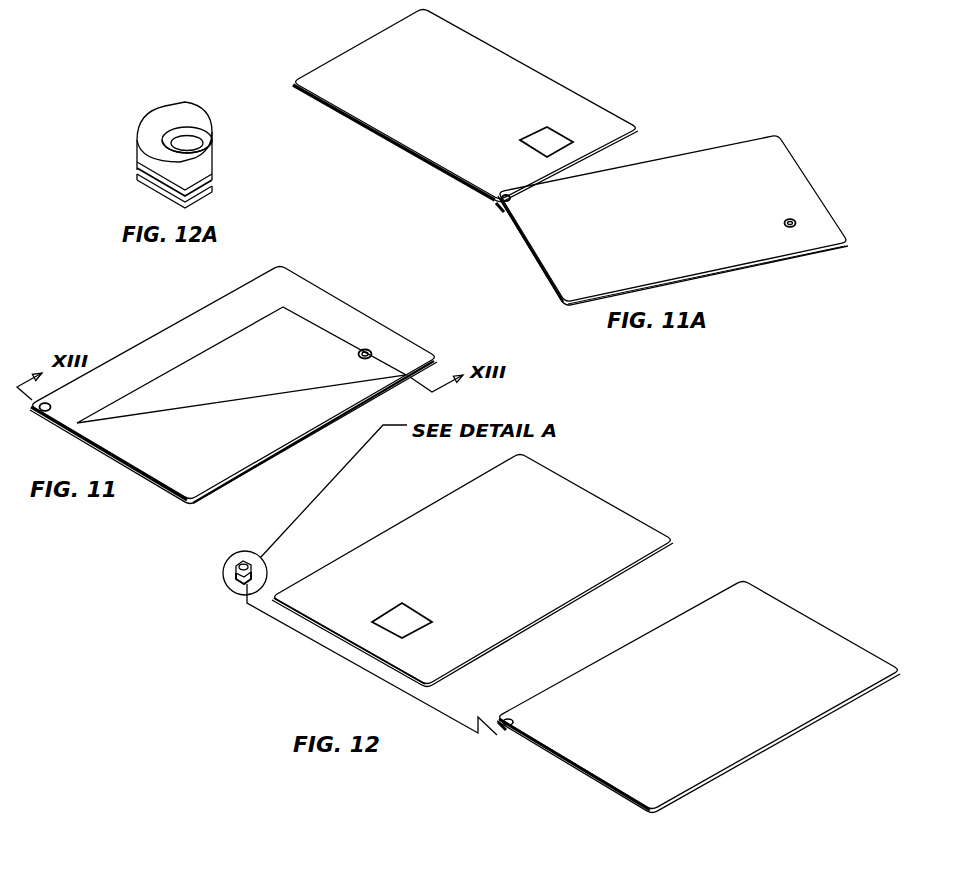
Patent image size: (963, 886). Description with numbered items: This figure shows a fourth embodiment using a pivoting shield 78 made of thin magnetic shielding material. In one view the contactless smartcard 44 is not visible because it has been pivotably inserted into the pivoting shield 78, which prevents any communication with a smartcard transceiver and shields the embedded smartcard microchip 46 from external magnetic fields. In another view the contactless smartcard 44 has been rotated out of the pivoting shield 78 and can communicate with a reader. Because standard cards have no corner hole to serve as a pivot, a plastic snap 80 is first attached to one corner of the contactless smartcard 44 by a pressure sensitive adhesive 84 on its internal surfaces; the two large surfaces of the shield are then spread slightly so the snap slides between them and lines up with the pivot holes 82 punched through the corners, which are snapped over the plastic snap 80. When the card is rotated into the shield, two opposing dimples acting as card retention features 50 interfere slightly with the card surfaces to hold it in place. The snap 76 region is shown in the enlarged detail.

In FIG. 11A, the contactless smartcard 44 is at (563, 82).
In FIG. 12, the contactless smartcard 44 is at (387, 665).
In FIG. 11A, the embedded smartcard microchip 46 is at (565, 137).
In FIG. 12, the embedded smartcard microchip 46 is at (387, 632).
In FIG. 11A, the card retention features 50 is at (797, 220).
In FIG. 12, the spacer 76 is at (235, 575).
In FIG. 11A, the pivoting shield 78 is at (547, 283).
In FIG. 12, the pivoting shield 78 is at (638, 810).
In FIG. 11A, the plastic snap 80 is at (497, 202).
In FIG. 12, the plastic snap 80 is at (235, 563).
In FIG. 12A, the plastic snap 80 is at (163, 140).
In FIG. 11A, the pivot hole 82 is at (500, 208).
In FIG. 12, the pivot hole 82 is at (502, 727).
In FIG. 12A, the pressure sensitive adhesive 84 is at (137, 170).